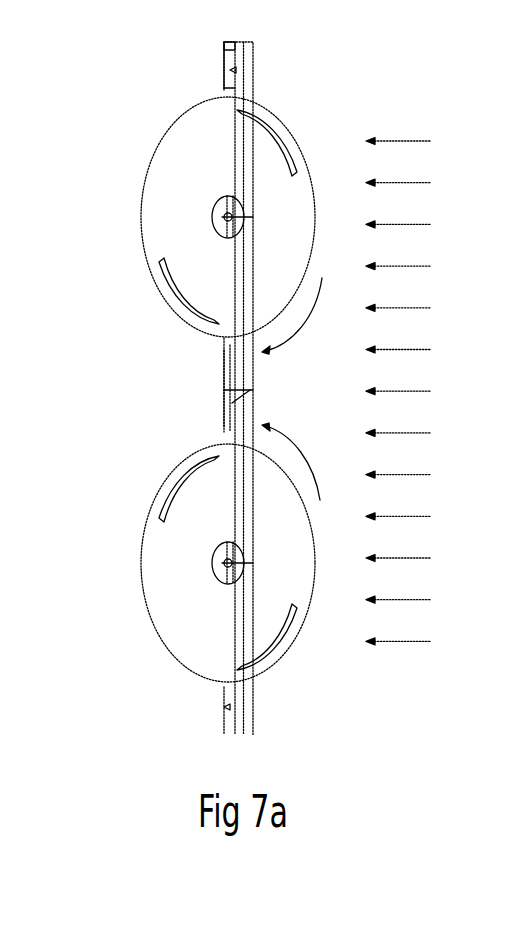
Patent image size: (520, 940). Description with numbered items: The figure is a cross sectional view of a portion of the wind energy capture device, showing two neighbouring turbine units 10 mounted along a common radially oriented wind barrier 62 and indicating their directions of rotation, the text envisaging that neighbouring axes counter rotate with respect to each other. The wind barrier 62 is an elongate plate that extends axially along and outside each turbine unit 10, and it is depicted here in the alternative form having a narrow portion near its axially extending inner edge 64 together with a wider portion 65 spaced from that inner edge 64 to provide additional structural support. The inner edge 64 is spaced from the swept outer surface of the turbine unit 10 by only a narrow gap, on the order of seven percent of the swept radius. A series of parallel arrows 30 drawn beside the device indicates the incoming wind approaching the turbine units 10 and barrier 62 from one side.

The turbine unit 10 is at (137, 300).
The fluid flow 30 is at (423, 391).
The wind barrier 62 is at (228, 360).
The inner edge 64 is at (226, 90).
The wider portion 65 is at (224, 49).